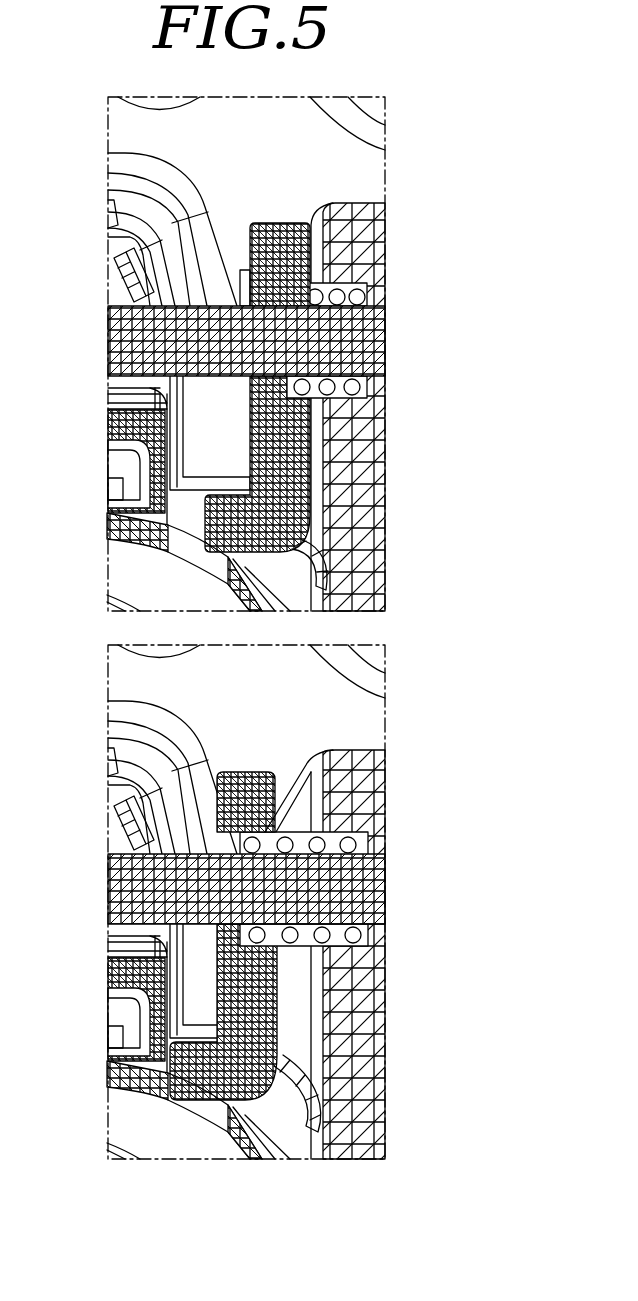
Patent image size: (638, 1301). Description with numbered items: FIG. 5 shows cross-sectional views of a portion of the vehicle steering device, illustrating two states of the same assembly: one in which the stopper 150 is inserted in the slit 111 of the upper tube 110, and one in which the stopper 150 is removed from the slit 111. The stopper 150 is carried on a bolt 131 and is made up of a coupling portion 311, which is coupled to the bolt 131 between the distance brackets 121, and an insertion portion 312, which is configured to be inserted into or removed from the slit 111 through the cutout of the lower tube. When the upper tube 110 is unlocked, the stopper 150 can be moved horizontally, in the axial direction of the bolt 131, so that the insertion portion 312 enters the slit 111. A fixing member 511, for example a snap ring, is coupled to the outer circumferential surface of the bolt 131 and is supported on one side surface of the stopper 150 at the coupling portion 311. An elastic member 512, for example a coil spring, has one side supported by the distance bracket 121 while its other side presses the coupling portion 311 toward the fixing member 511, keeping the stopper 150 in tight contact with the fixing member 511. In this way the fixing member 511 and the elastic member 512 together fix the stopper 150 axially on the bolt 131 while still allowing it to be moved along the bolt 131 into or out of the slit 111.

The upper tube 110 is at (150, 524).
The slit 111 is at (188, 554).
The distance bracket 121 is at (375, 465).
The bolt 131 is at (118, 339).
The stopper 150 is at (267, 982).
The coupling portion 311 is at (278, 262).
The insertion portion 312 is at (260, 527).
The fixing member 511 is at (240, 292).
The elastic member 512 is at (338, 298).